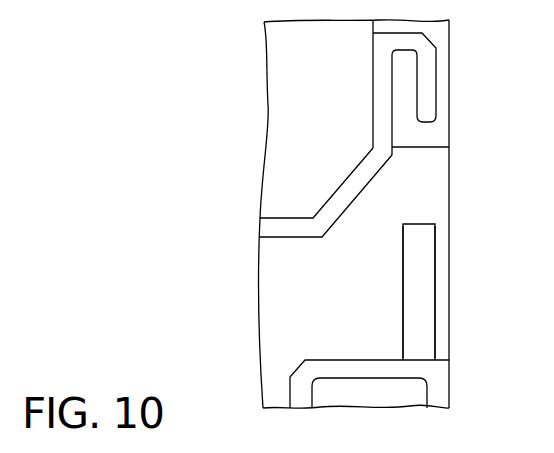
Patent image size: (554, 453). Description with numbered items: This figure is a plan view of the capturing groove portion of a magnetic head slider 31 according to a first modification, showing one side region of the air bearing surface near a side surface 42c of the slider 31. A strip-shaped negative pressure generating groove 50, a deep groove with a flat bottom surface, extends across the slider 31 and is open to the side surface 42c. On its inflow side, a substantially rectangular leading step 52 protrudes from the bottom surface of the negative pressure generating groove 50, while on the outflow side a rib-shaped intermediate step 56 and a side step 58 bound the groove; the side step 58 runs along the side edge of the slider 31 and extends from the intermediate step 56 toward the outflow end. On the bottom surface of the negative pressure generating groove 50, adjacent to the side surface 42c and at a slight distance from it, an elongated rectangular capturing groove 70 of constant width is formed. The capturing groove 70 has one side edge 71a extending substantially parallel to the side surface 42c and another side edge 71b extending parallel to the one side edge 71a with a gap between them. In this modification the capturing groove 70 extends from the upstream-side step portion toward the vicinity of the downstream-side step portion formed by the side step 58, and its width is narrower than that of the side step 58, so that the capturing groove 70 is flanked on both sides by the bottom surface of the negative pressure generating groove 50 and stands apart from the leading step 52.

The slider 31 is at (241, 125).
The negative pressure generating groove 50 is at (283, 315).
The side surface 42c is at (450, 183).
The side step 58 is at (437, 127).
The intermediate step 56 is at (283, 228).
The capturing groove 70 is at (420, 268).
The other side edge 71b is at (403, 246).
The one side edge 71a is at (436, 312).
The leading step 52 is at (437, 390).